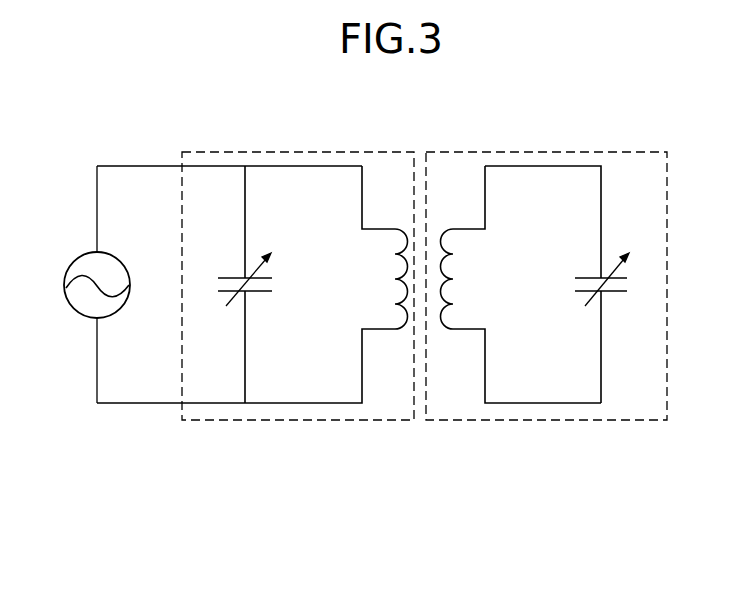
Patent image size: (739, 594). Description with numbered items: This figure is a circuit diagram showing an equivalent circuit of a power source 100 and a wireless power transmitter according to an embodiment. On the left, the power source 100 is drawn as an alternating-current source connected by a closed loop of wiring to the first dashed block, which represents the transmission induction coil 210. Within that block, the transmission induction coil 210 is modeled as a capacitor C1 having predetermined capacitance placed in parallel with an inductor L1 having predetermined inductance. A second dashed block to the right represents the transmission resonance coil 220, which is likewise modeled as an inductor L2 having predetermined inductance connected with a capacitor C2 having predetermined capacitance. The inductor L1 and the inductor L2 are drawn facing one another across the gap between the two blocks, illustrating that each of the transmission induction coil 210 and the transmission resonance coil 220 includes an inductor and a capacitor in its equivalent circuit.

The power source 100 is at (78, 257).
The transmission induction coil 210 is at (324, 150).
The transmission resonance coil 220 is at (488, 150).
The capacitor C1 is at (231, 284).
The inductor L1 is at (326, 284).
The inductor L2 is at (520, 284).
The capacitor C2 is at (571, 284).